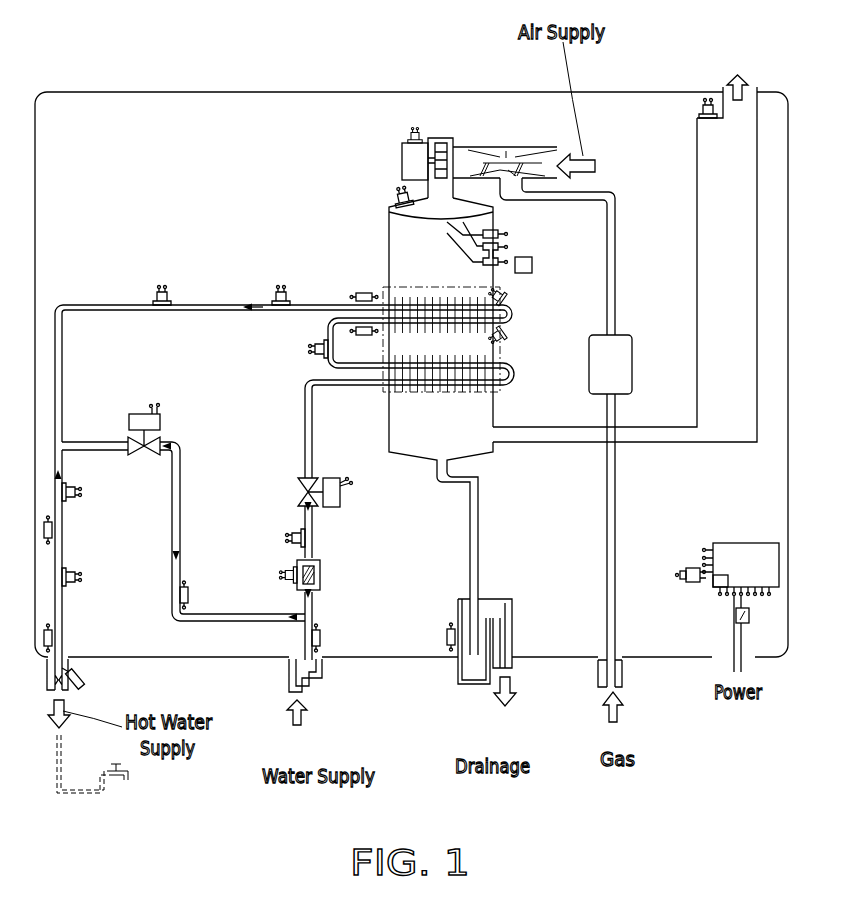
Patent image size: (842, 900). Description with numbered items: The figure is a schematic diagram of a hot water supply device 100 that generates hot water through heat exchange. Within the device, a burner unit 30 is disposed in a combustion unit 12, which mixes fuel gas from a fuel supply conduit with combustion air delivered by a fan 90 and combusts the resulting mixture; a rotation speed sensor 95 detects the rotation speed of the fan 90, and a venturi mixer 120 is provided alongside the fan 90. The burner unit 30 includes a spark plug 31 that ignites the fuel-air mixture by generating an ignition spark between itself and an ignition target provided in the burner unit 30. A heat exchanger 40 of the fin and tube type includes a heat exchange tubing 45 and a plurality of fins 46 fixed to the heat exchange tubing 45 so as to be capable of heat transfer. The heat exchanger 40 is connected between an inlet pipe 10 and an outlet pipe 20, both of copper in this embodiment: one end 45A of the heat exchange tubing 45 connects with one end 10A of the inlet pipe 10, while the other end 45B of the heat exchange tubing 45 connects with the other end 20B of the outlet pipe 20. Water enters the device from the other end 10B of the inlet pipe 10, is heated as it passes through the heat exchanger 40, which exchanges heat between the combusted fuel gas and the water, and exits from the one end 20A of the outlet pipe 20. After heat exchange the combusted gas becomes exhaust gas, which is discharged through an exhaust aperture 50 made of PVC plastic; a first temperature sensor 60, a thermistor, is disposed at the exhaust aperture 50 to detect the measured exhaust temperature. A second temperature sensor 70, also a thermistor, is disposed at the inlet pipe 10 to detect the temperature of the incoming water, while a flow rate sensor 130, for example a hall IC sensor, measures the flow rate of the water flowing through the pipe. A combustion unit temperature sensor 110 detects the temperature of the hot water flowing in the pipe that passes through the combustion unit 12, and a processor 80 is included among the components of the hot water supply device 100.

The hot water supply device 100 is at (371, 92).
The fan 90 is at (440, 143).
The venturi mixer 120 is at (502, 152).
The first temperature sensor 60 is at (703, 113).
The rotation speed sensor 95 is at (402, 141).
The exhaust aperture 50 is at (745, 108).
The burner unit 30 is at (407, 218).
The fins 46 is at (430, 300).
The spark plug 31 is at (512, 256).
The combustion unit temperature sensor 110 is at (275, 298).
The other end of the outlet pipe 20B is at (322, 304).
The other end of the heat exchange tubing 45B is at (335, 304).
The heat exchanger 40 is at (385, 346).
The one end of the inlet pipe 10A is at (345, 386).
The one end of the heat exchange tubing 45A is at (362, 389).
The heat exchange tubing 45 is at (420, 388).
The combustion unit 12 is at (473, 458).
The processor 80 is at (740, 560).
The second temperature sensor 70 is at (296, 538).
The flow rate sensor 130 is at (297, 565).
The inlet pipe 10 is at (313, 600).
The outlet pipe 20 is at (60, 637).
The one end of the outlet pipe 20A is at (64, 688).
The other end of the inlet pipe 10B is at (300, 680).